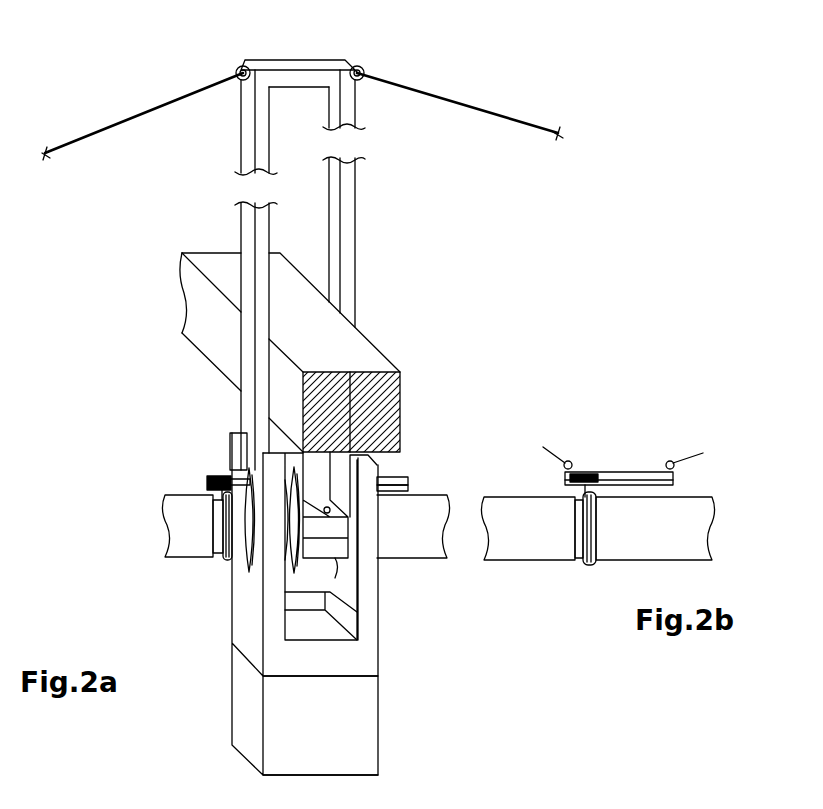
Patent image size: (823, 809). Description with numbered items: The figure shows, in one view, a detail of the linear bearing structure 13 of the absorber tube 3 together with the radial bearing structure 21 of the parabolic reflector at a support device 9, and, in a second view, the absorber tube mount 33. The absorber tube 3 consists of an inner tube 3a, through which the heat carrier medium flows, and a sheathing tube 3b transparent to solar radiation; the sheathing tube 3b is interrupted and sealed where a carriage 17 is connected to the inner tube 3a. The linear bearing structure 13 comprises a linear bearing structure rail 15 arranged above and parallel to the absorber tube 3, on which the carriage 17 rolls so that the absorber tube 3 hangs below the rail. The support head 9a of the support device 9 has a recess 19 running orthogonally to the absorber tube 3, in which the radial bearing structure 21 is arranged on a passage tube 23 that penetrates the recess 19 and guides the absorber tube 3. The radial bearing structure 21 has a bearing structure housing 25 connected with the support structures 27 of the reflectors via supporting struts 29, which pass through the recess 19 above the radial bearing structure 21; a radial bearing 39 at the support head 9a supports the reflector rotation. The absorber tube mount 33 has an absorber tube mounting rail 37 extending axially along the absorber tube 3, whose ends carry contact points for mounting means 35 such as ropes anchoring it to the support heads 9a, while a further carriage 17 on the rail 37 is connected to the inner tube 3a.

In FIG. 2a, the absorber tube 3 is at (176, 510).
In FIG. 2b, the absorber tube 3 is at (693, 515).
In FIG. 2a, the inner tube 3a is at (228, 560).
In FIG. 2b, the inner tube 3a is at (588, 560).
In FIG. 2a, the sheathing tube 3b is at (172, 555).
In FIG. 2b, the sheathing tube 3b is at (505, 505).
In FIG. 2a, the support device 9 is at (446, 264).
In FIG. 2a, the support head 9a is at (368, 585).
In FIG. 2a, the linear bearing structure 13 is at (196, 460).
In FIG. 2a, the linear bearing structure rail 15 is at (398, 482).
In FIG. 2a, the carriage 17 is at (205, 478).
In FIG. 2b, the carriage 17 is at (587, 468).
In FIG. 2a, the recess 19 is at (306, 266).
In FIG. 2a, the radial bearing structure 21 is at (309, 622).
In FIG. 2a, the passage tube 23 is at (302, 553).
In FIG. 2a, the bearing structure housing 25 is at (300, 573).
In FIG. 2a, the support structure 27 is at (118, 272).
In FIG. 2a, the supporting strut 29 is at (213, 262).
In FIG. 2b, the absorber tube mount 33 is at (655, 420).
In FIG. 2a, the mounting means 35 is at (102, 128).
In FIG. 2b, the mounting means 35 is at (543, 447).
In FIG. 2b, the absorber tube mounting rail 37 is at (640, 468).
In FIG. 2a, the radial bearing 39 is at (352, 564).